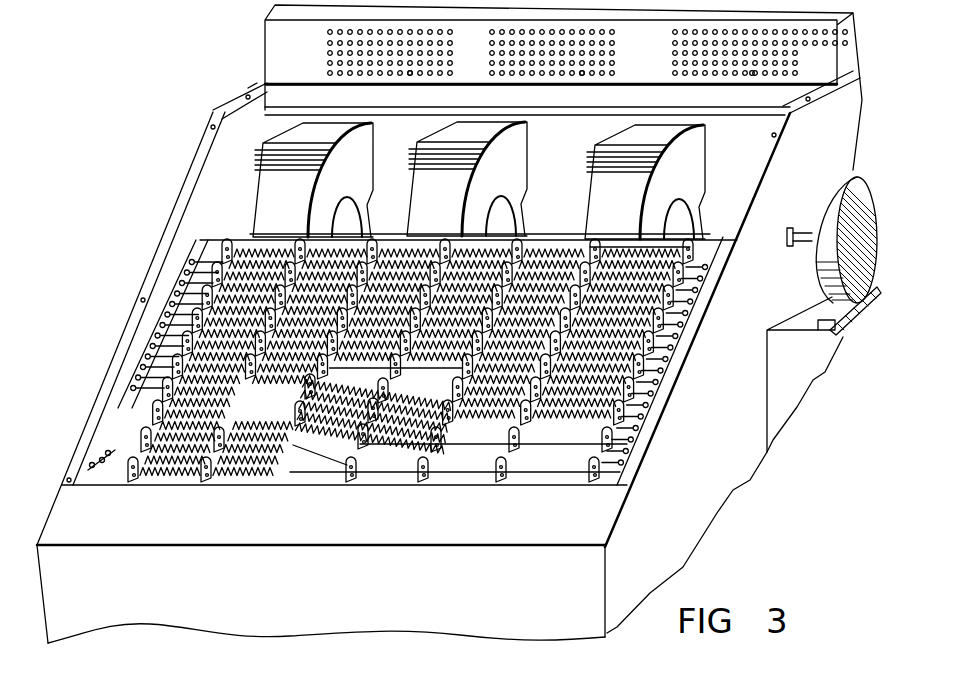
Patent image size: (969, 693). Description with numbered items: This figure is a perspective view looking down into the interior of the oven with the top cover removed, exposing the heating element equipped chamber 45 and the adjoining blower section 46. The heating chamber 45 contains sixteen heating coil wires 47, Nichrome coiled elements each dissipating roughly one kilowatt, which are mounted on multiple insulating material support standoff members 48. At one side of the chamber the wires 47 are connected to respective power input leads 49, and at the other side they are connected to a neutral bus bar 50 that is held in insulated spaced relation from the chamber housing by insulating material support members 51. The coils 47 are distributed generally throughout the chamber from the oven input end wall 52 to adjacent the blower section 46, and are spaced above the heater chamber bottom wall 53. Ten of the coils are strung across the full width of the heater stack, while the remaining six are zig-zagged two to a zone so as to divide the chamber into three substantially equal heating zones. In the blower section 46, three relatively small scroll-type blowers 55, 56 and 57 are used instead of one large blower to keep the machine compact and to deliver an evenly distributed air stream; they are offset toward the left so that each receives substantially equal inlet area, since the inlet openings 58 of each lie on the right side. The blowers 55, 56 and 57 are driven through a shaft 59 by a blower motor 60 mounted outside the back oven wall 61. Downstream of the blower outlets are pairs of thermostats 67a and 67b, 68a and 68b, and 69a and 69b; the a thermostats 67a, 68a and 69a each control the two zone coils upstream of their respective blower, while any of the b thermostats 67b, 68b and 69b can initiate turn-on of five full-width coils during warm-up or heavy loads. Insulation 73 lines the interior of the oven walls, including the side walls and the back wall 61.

The heating element equipped chamber 45 is at (121, 412).
The blower section 46 is at (224, 183).
The heating coil wires 47 is at (418, 368).
The insulating material support standoff members 48 is at (690, 247).
The power input leads 49 is at (655, 361).
The neutral bus bar 50 is at (153, 373).
The insulating material support members 51 is at (105, 477).
The oven input end wall 52 is at (425, 618).
The heater chamber bottom wall 53 is at (313, 478).
The blower 55 is at (367, 145).
The blower 56 is at (527, 144).
The blower 57 is at (697, 147).
The inlet openings 58 is at (681, 202).
The shaft 59 is at (708, 238).
The blower motor 60 is at (817, 253).
The back oven wall 61 is at (737, 473).
The thermostat 67a is at (392, 78).
The thermostat 67b is at (412, 78).
The thermostat 68a is at (552, 78).
The thermostat 68b is at (582, 78).
The thermostat 69a is at (722, 78).
The thermostat 69b is at (752, 78).
The insulation 73 is at (240, 115).